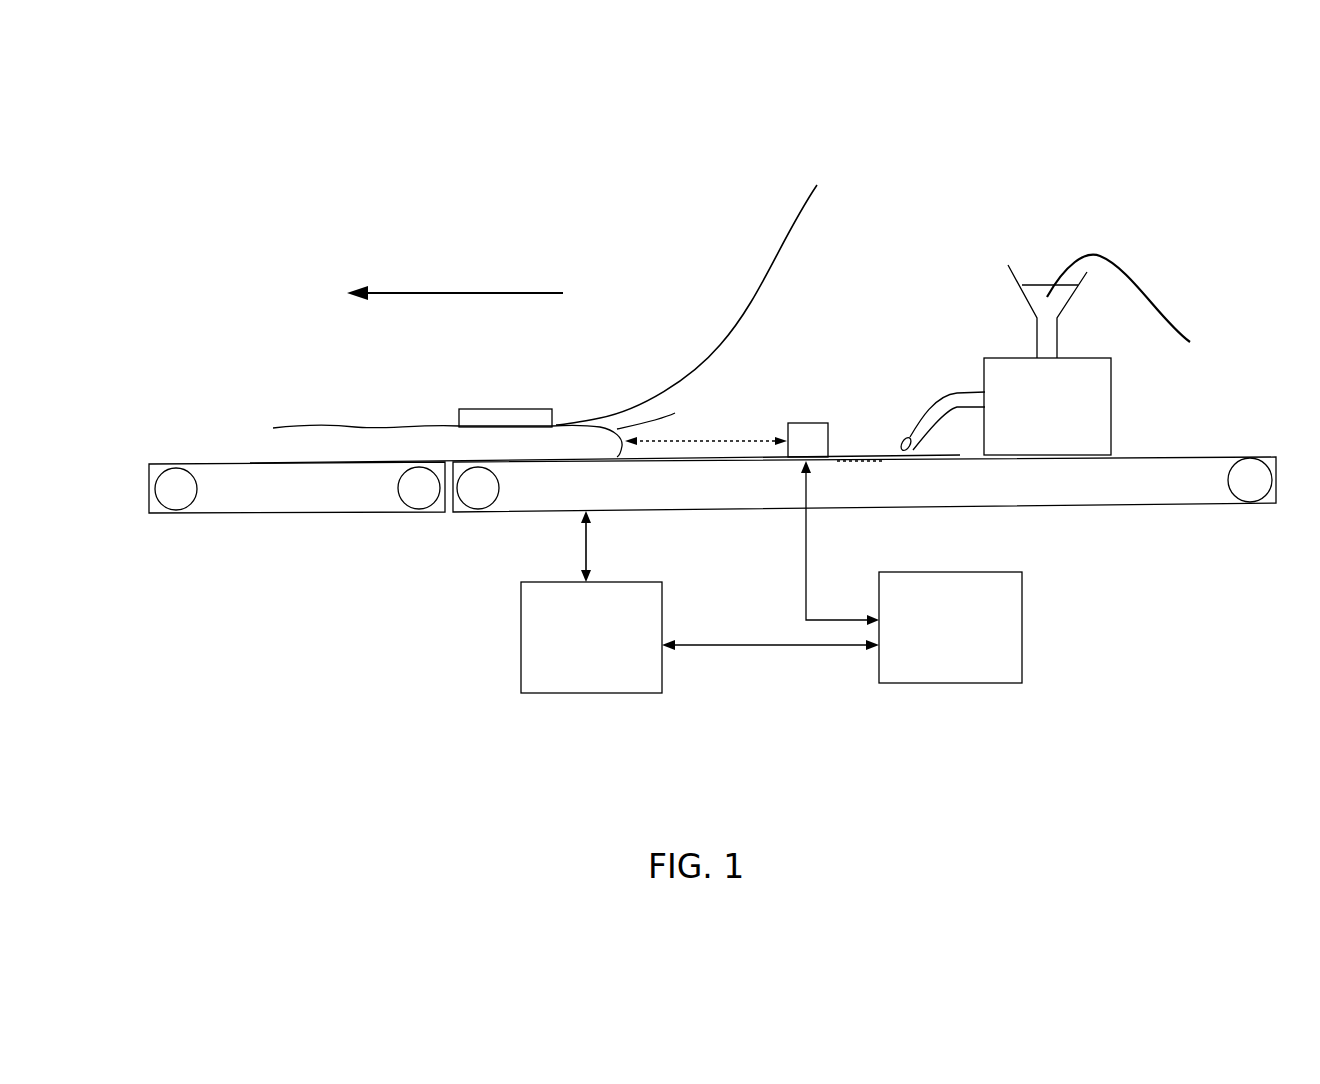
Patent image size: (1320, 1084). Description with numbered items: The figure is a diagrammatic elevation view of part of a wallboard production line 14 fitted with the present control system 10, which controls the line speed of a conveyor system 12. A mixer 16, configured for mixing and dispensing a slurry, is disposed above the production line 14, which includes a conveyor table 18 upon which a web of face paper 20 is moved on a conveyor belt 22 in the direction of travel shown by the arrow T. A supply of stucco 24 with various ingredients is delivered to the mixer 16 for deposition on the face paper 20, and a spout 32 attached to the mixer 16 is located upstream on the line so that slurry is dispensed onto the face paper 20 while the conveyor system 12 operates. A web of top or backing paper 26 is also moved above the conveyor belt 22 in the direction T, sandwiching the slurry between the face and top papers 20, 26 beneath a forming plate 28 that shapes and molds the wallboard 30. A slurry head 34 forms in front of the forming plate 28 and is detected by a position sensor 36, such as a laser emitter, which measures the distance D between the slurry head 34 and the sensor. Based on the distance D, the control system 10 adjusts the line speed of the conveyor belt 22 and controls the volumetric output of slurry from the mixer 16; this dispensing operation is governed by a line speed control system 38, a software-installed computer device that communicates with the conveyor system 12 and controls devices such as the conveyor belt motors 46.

The control system 10 is at (977, 262).
The conveyor system 12 is at (582, 710).
The wallboard production line 14 is at (523, 465).
The mixer 16 is at (1047, 360).
The conveyor table 18 is at (1072, 505).
The web of face paper 20 is at (853, 455).
The conveyor belt 22 is at (883, 462).
The supply of stucco 24 is at (1134, 307).
The web of top or backing paper 26 is at (677, 372).
The forming plate 28 is at (507, 408).
The wallboard 30 is at (352, 423).
The spout 32 is at (933, 397).
The slurry head 34 is at (617, 430).
The position sensor 36 is at (800, 423).
The line speed control system 38 is at (929, 703).
The conveyor belt motors 46 is at (477, 511).
The direction of travel T is at (427, 290).
The distance D is at (717, 438).